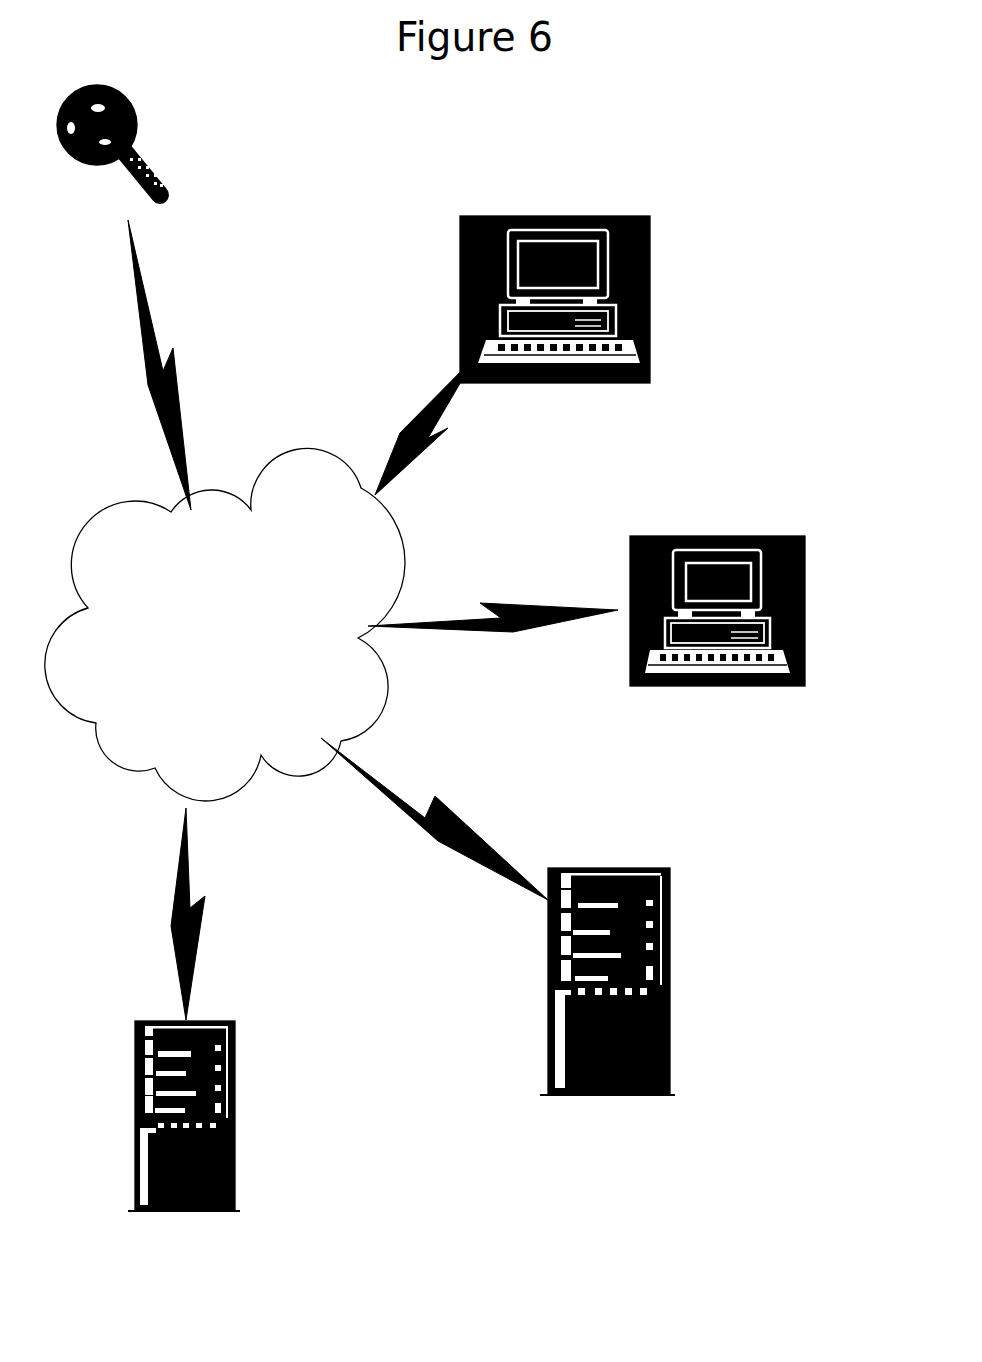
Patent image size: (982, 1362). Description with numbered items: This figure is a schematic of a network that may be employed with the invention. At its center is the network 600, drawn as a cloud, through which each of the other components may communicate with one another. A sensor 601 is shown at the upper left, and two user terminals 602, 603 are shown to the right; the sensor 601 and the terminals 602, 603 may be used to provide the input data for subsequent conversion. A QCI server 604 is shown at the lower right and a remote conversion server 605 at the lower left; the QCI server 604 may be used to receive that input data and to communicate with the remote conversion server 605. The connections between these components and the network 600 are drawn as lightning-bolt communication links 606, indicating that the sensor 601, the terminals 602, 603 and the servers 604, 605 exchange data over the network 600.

The network 600 is at (225, 624).
The sensor 601 is at (172, 124).
The user terminal 602 is at (601, 285).
The user terminal 603 is at (758, 597).
The QCI server 604 is at (681, 981).
The remote conversion server 605 is at (256, 1114).
The communication link 606 is at (354, 620).